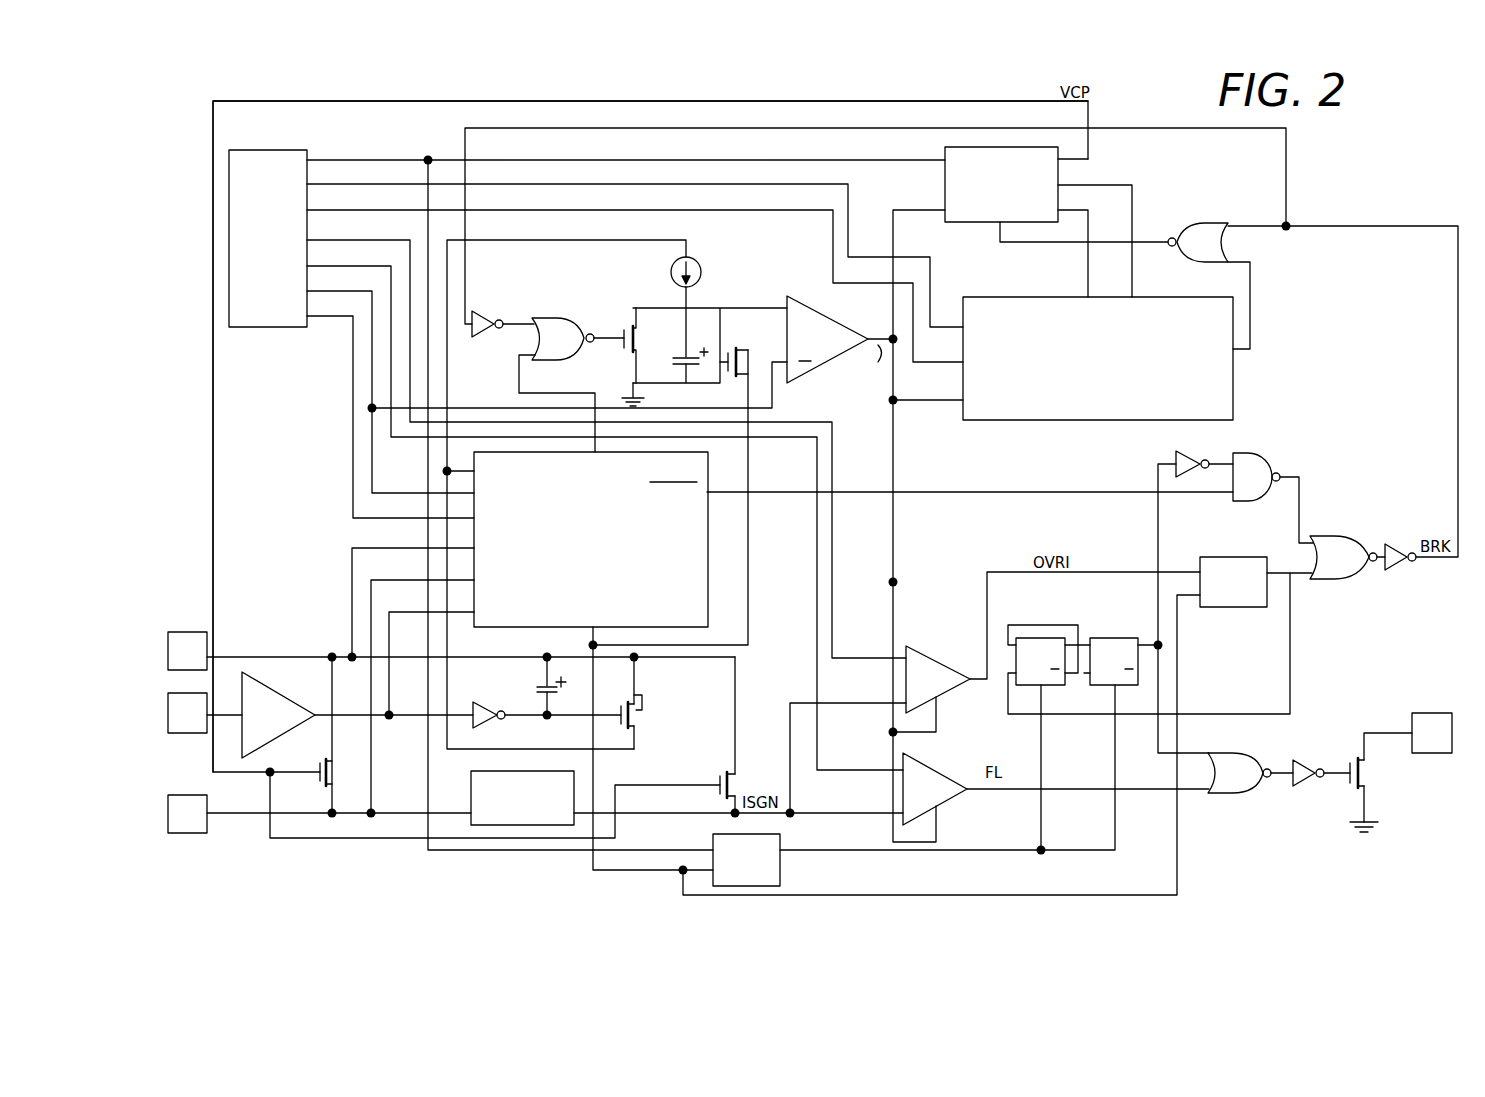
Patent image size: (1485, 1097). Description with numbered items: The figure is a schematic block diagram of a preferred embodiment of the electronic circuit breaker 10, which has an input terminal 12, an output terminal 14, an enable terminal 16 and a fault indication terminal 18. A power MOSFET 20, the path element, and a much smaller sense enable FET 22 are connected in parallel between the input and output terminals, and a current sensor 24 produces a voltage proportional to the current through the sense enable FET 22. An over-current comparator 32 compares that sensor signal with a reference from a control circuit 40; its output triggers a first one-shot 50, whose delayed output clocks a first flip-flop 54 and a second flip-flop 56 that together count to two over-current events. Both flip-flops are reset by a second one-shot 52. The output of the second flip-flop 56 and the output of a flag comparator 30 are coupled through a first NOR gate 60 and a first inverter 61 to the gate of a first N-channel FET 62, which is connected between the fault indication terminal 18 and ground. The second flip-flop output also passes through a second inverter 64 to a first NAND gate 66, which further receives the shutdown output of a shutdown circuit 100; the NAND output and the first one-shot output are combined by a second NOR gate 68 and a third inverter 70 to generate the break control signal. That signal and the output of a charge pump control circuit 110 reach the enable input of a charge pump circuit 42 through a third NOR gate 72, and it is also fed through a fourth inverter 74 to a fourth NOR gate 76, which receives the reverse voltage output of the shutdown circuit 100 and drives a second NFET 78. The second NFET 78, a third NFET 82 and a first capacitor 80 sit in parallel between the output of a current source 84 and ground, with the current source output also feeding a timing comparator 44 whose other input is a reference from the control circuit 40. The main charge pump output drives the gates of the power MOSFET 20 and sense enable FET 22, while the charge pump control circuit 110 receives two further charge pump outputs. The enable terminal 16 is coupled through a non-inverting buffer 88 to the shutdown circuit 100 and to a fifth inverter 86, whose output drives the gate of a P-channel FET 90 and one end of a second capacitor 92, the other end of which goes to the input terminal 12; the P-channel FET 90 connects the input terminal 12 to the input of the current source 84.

The electronic circuit breaker 10 is at (786, 92).
The input terminal 12 is at (186, 632).
The output terminal 14 is at (186, 833).
The enable terminal 16 is at (184, 733).
The fault indication terminal 18 is at (1436, 713).
The power MOSFET 20 is at (328, 778).
The sense enable FET 22 is at (723, 776).
The current sensor 24 is at (471, 802).
The flag comparator 30 is at (935, 804).
The over-current comparator 32 is at (926, 648).
The control circuit 40 is at (236, 150).
The charge pump circuit 42 is at (975, 225).
The timing comparator 44 is at (818, 322).
The first one-shot 50 is at (1212, 556).
The second one-shot 52 is at (780, 870).
The first flip-flop 54 is at (1030, 637).
The second flip-flop 56 is at (1125, 637).
The first NOR gate 60 is at (1256, 794).
The first inverter 61 is at (1305, 788).
The first N-channel FET 62 is at (1352, 760).
The second inverter 64 is at (1188, 450).
The first NAND gate 66 is at (1262, 452).
The second NOR gate 68 is at (1343, 571).
The third inverter 70 is at (1400, 572).
The third NOR gate 72 is at (1195, 226).
The fourth inverter 74 is at (494, 336).
The fourth NOR gate 76 is at (566, 318).
The second NFET 78 is at (623, 328).
The first capacitor 80 is at (670, 372).
The third NFET 82 is at (733, 352).
The current source 84 is at (697, 260).
The fifth inverter 86 is at (492, 722).
The non-inverting buffer 88 is at (296, 696).
The P-channel FET 90 is at (634, 720).
The second capacitor 92 is at (540, 690).
The shutdown circuit 100 is at (708, 596).
The charge pump control circuit 110 is at (1233, 392).